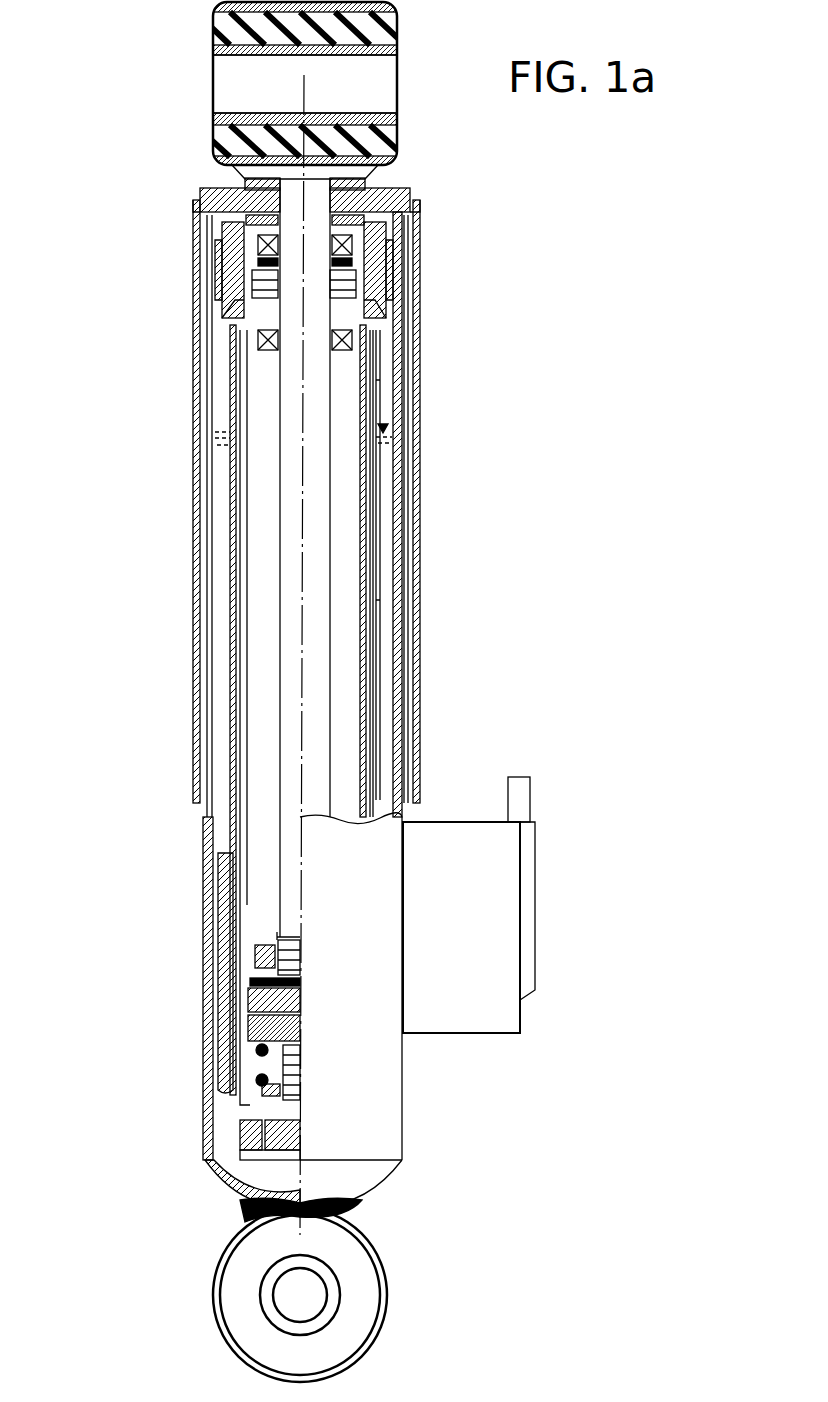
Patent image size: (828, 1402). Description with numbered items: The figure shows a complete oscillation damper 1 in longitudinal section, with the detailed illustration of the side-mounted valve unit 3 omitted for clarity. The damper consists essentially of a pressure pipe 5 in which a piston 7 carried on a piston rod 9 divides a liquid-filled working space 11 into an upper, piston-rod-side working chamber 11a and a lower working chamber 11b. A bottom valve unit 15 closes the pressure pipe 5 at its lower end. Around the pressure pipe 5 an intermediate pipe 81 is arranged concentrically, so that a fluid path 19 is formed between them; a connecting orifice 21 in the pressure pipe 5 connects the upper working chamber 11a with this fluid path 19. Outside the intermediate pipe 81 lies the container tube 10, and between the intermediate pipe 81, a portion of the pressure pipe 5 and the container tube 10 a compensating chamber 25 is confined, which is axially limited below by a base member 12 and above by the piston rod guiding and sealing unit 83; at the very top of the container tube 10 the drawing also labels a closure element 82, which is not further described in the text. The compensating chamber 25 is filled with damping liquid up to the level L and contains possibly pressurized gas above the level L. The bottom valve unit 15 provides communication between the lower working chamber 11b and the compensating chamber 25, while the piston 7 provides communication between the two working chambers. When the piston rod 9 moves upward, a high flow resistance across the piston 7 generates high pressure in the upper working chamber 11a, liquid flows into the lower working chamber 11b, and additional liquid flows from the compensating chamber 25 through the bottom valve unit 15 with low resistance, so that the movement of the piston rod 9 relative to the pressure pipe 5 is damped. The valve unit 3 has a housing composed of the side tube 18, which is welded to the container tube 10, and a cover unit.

The oscillation damper 1 is at (158, 675).
The valve unit 3 is at (468, 815).
The pressure pipe 5 is at (362, 593).
The piston 7 is at (238, 1030).
The piston rod 9 is at (318, 495).
The container tube 10 is at (400, 520).
The working space 11 is at (258, 463).
The upper working chamber 11a is at (258, 578).
The lower working chamber 11b is at (250, 1110).
The base member 12 is at (244, 1185).
The bottom valve unit 15 is at (240, 1150).
The side tube 18 is at (462, 1033).
The fluid path 19 is at (373, 628).
The connecting orifice 21 is at (370, 400).
The compensating chamber 25 is at (380, 565).
The intermediate pipe 81 is at (376, 678).
The closure cap 82 is at (197, 206).
The piston rod guiding and sealing unit 83 is at (383, 300).
The level L is at (205, 408).